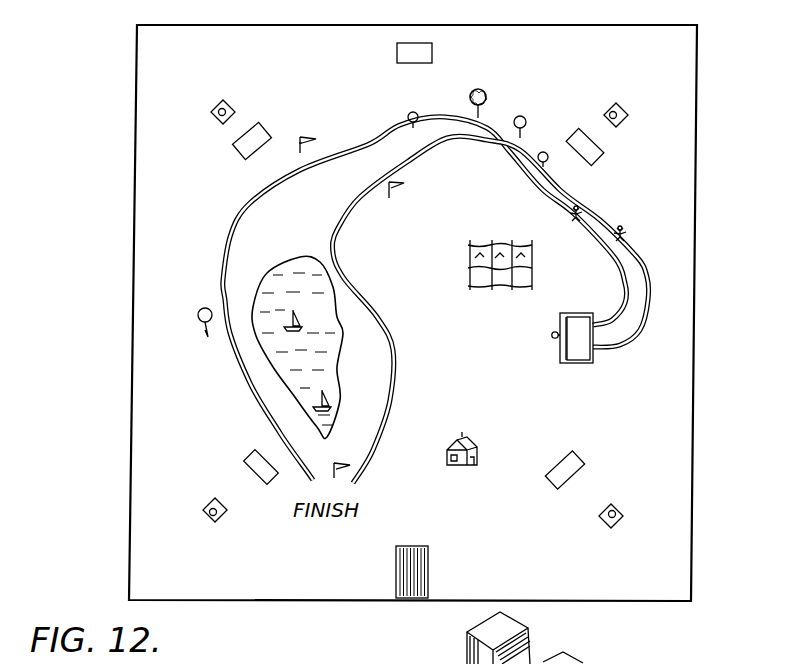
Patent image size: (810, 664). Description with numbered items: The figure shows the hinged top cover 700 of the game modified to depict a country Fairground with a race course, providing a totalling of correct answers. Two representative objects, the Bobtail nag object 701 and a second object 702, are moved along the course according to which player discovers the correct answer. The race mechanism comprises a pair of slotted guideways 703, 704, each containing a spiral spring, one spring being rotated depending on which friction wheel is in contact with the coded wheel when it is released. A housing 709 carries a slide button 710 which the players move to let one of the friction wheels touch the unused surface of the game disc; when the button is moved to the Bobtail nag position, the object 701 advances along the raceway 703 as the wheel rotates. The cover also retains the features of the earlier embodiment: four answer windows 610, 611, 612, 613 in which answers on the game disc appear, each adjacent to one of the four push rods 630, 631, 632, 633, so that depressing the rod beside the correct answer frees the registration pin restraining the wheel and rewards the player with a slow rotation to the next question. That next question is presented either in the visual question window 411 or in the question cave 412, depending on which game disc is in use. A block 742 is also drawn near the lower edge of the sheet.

The hinged top cover 700 is at (693, 462).
The slotted guideway 703 is at (442, 140).
The slotted guideway 704 is at (487, 128).
The housing 709 is at (585, 353).
The slide button 710 is at (550, 335).
The Bobtail nag object 701 is at (622, 233).
The representative object 702 is at (583, 208).
The answer window 610 is at (593, 157).
The answer window 611 is at (558, 478).
The answer window 612 is at (250, 460).
The answer window 613 is at (258, 135).
The push rod 630 is at (617, 113).
The push rod 631 is at (605, 530).
The push rod 632 is at (212, 508).
The push rod 633 is at (221, 102).
The visual question window 411 is at (397, 53).
The question cave 412 is at (428, 577).
The cube block 742 is at (532, 647).